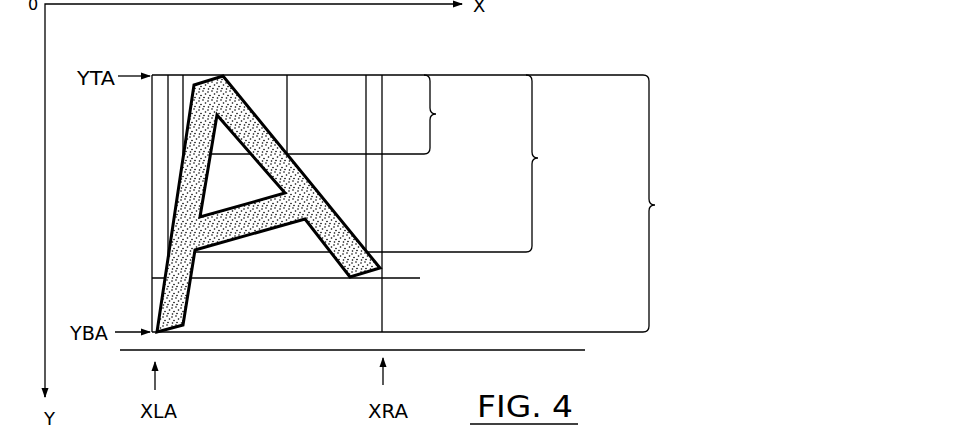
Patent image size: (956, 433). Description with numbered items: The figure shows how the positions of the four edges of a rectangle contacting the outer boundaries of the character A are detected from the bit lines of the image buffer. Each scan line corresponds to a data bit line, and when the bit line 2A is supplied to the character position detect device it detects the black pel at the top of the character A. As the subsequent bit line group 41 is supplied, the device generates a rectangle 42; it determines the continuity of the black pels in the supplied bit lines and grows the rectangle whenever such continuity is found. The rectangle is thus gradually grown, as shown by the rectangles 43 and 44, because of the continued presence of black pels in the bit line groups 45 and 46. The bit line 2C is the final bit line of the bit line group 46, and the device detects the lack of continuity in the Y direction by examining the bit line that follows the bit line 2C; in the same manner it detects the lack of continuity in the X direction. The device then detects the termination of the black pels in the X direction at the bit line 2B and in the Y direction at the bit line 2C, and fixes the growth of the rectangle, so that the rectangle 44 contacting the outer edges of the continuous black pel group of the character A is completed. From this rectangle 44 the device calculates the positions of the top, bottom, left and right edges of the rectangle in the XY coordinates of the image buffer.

The bit line 2A is at (580, 72).
The bit line 2B is at (300, 280).
The bit line 2C is at (588, 328).
The bit line group 41 is at (472, 114).
The rectangle 42 is at (287, 88).
The rectangle 43 is at (366, 88).
The rectangle 44 is at (382, 88).
The bit line group 45 is at (579, 163).
The bit line group 46 is at (703, 203).